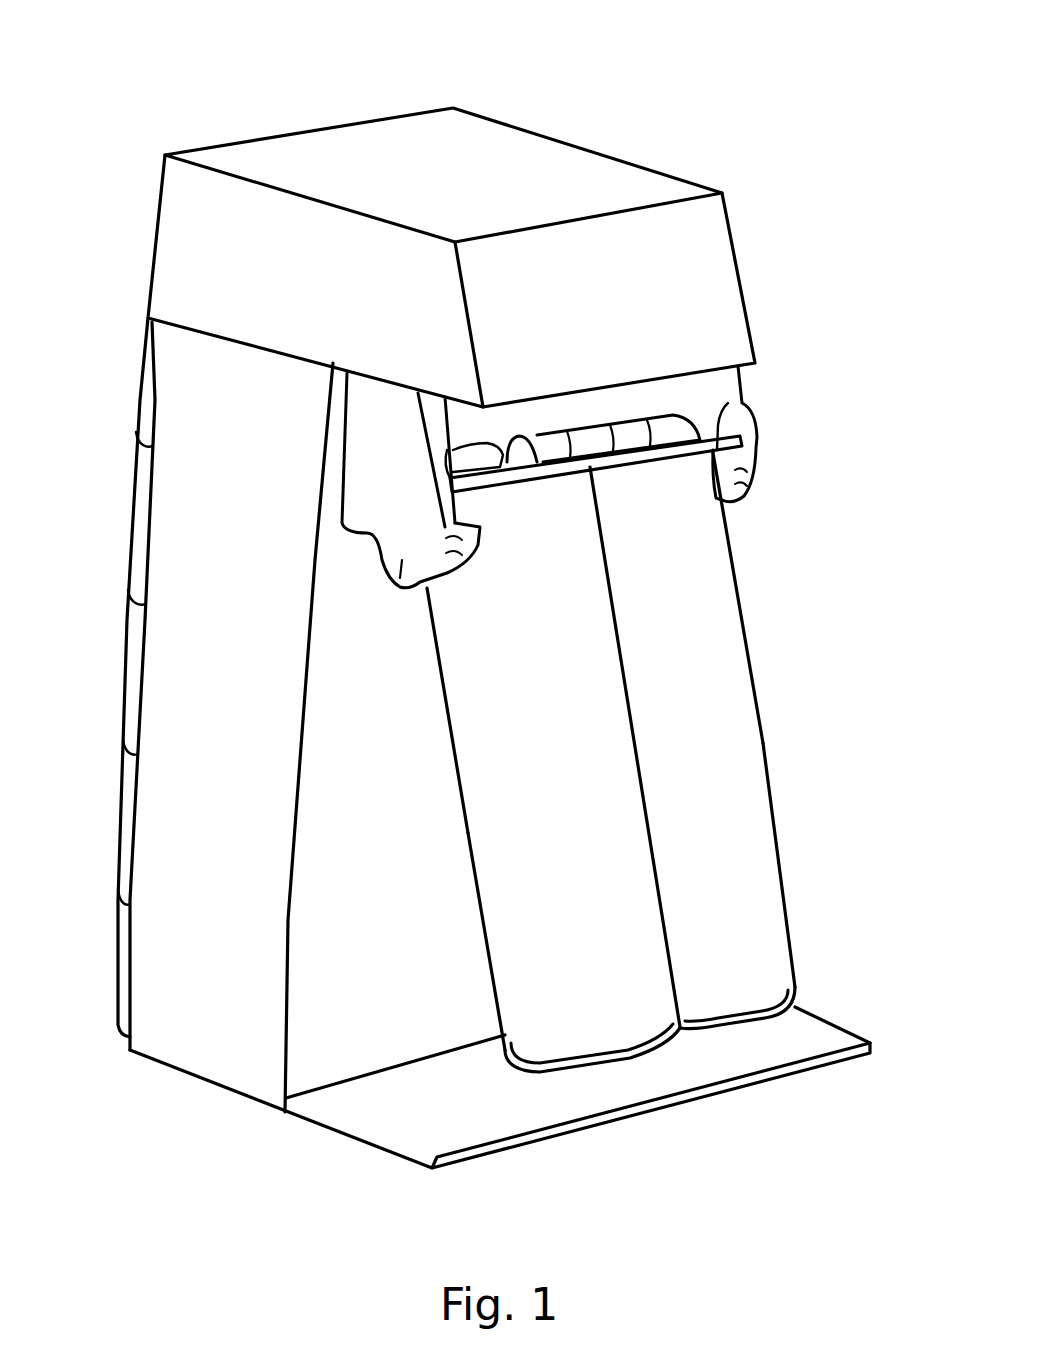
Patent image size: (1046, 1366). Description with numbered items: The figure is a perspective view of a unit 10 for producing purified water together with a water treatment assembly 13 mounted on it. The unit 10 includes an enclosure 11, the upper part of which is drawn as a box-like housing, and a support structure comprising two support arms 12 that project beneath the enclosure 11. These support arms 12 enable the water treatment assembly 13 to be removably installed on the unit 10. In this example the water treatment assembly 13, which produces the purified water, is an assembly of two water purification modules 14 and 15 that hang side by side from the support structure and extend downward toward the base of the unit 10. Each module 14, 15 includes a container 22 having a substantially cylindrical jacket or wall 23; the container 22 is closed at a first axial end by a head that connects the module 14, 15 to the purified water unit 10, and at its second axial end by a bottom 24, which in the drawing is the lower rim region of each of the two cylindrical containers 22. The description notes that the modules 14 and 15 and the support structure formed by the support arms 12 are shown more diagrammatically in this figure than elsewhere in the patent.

The unit for producing purified water 10 is at (606, 105).
The enclosure 11 is at (180, 525).
The support arms 12 is at (400, 583).
The water treatment assembly 13 is at (774, 605).
The water purification module 14 is at (464, 962).
The water purification module 15 is at (814, 929).
The container 22 is at (777, 741).
The jacket or wall 23 is at (713, 1010).
The bottom 24 is at (548, 1073).